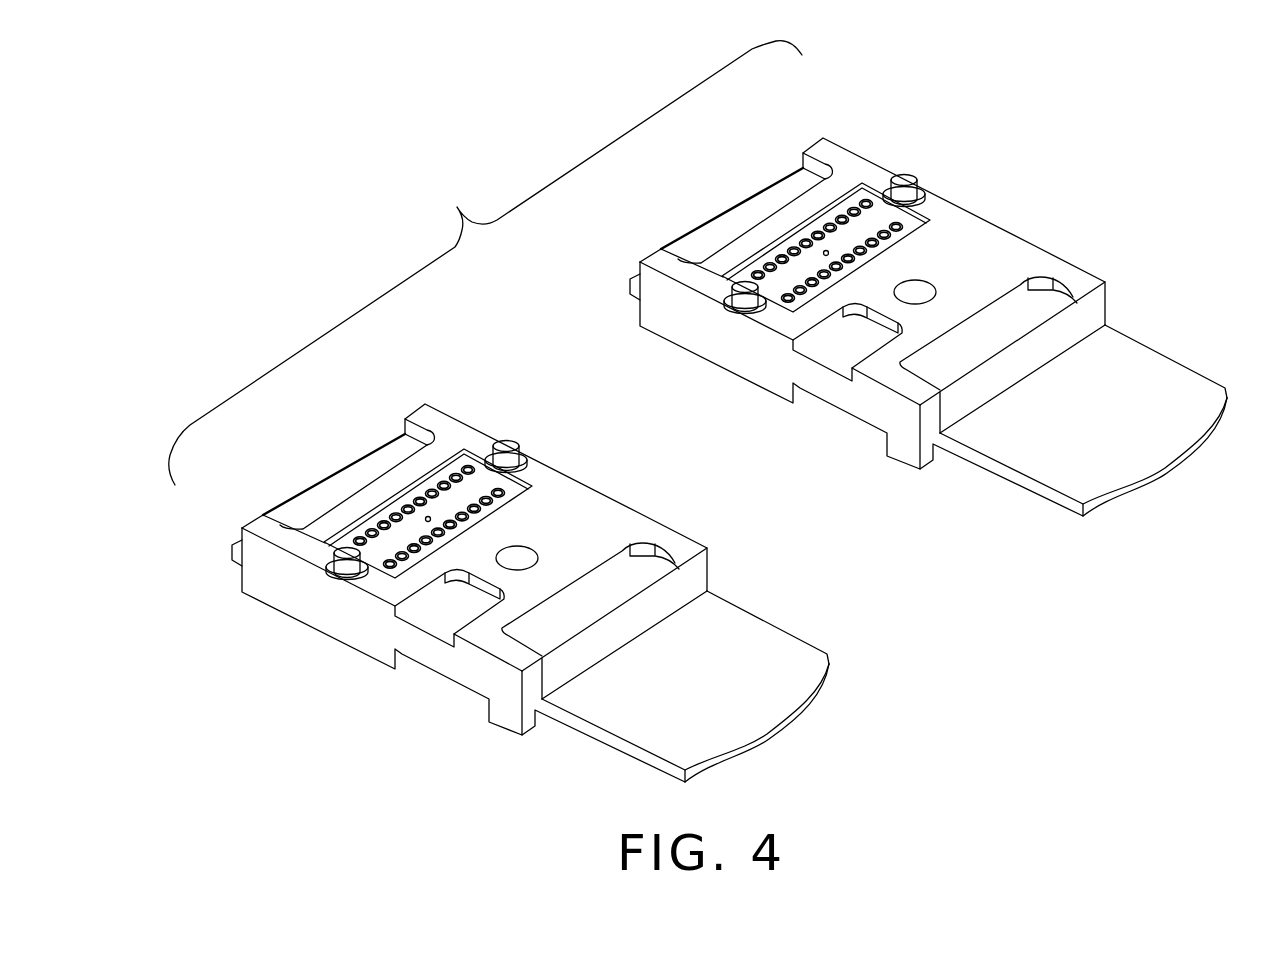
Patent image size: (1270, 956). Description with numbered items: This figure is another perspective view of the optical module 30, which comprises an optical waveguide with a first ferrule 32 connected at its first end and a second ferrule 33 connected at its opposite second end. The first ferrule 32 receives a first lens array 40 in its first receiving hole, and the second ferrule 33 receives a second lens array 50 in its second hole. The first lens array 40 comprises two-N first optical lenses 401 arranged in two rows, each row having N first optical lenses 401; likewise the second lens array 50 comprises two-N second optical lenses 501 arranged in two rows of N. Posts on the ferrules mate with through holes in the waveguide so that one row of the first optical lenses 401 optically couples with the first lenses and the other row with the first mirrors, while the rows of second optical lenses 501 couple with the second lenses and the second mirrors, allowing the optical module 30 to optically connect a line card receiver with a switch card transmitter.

The optical module 30 is at (485, 263).
The first ferrule 32 is at (860, 157).
The second ferrule 33 is at (428, 418).
The first lens array 40 is at (787, 277).
The first optical lenses 401 is at (822, 250).
The second lens array 50 is at (470, 466).
The second optical lenses 501 is at (402, 492).